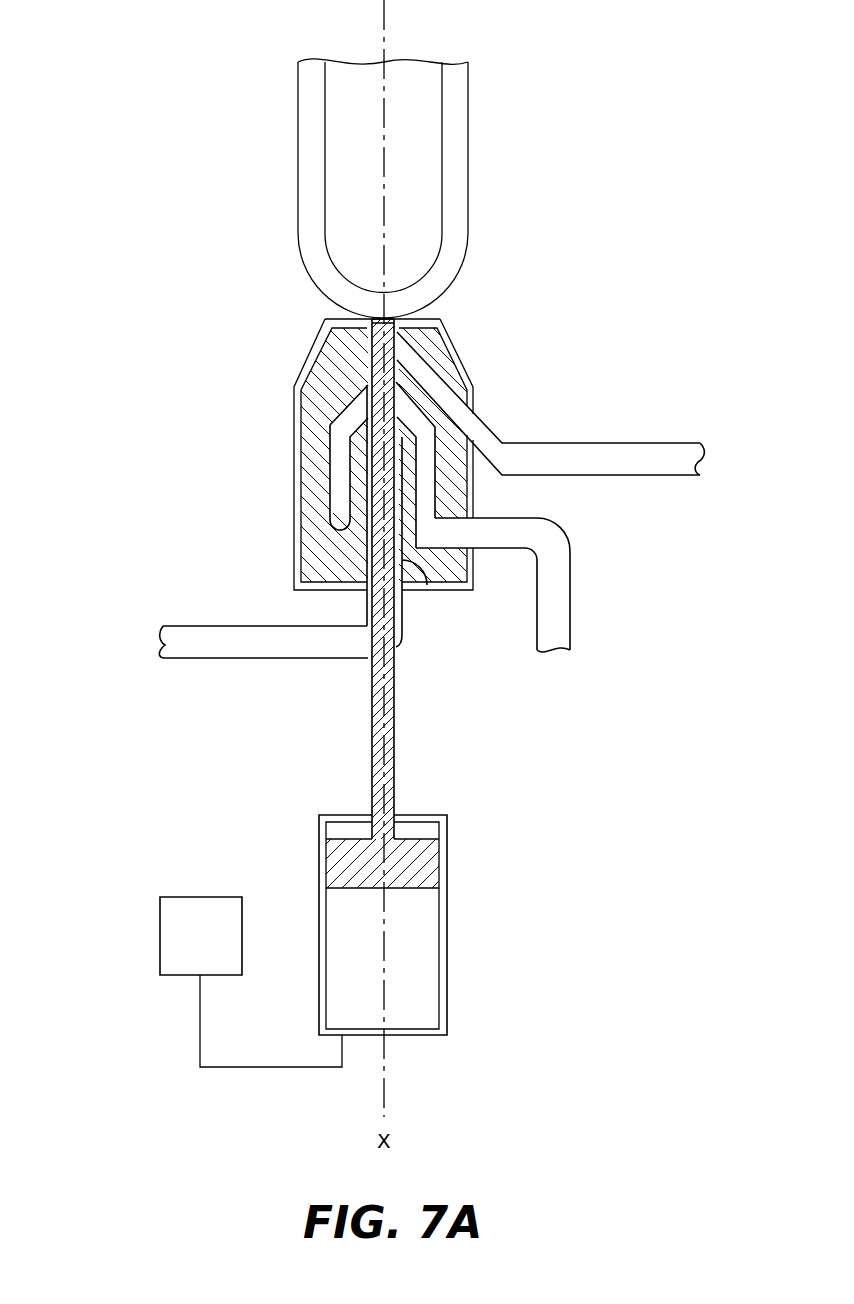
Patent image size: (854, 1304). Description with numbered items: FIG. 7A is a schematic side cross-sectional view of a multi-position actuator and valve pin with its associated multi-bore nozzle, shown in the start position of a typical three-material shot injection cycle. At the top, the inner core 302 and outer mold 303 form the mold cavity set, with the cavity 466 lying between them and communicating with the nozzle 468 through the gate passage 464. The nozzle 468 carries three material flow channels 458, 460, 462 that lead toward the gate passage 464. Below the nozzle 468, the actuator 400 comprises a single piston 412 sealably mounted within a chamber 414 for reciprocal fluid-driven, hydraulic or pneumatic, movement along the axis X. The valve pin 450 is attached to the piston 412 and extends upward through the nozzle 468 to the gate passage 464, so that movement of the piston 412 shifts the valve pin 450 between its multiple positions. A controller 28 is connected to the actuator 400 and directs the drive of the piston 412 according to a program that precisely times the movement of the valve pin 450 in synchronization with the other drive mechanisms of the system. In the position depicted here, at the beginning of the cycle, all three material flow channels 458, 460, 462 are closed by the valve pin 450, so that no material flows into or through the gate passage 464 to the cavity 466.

The controller 28 is at (160, 897).
The inner core 302 is at (406, 80).
The outer mold 303 is at (613, 226).
The actuator 400 is at (460, 811).
The piston 412 is at (356, 838).
The chamber 414 is at (425, 953).
The valve pin 450 is at (394, 733).
The material flow channel 458 is at (330, 470).
The material flow channel 460 is at (427, 585).
The material flow channel 462 is at (458, 383).
The gate passage 464 is at (382, 318).
The cavity 466 is at (449, 113).
The nozzle 468 is at (467, 334).